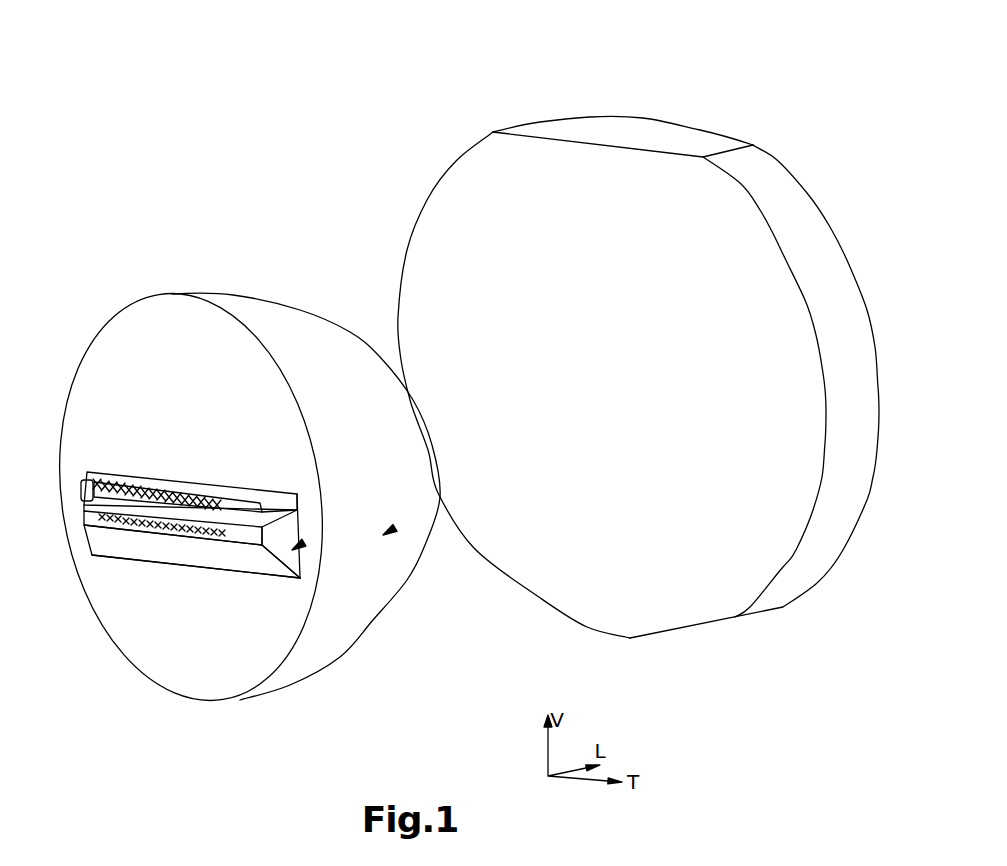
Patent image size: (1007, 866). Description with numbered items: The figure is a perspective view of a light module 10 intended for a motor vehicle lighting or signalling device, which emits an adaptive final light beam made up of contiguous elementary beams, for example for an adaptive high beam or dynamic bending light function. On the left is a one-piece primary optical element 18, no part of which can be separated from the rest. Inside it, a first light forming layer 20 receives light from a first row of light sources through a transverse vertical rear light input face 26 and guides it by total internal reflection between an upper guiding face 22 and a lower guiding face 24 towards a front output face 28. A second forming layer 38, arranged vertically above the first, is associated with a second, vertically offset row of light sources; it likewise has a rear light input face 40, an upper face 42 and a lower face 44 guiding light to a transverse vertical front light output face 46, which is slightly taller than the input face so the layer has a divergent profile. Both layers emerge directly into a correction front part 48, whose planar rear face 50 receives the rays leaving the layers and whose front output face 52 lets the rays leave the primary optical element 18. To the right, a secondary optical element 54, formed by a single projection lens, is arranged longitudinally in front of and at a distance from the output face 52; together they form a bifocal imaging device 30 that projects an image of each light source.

The light module 10 is at (364, 120).
The primary optical element 18 is at (236, 450).
The first light forming layer 20 is at (313, 563).
The upper guiding face 22 is at (86, 479).
The lower guiding face 24 is at (253, 562).
The rear light input face 26 is at (237, 537).
The front output face 28 is at (299, 526).
The bifocal imaging device 30 is at (341, 270).
The second forming layer 38 is at (172, 410).
The rear light input face 40 is at (238, 500).
The upper face 42 is at (203, 487).
The lower face 44 is at (56, 536).
The front light output face 46 is at (300, 500).
The correction front part 48 is at (400, 545).
The rear face 50 is at (177, 652).
The front output face 52 is at (337, 660).
The secondary optical element 54 is at (643, 118).